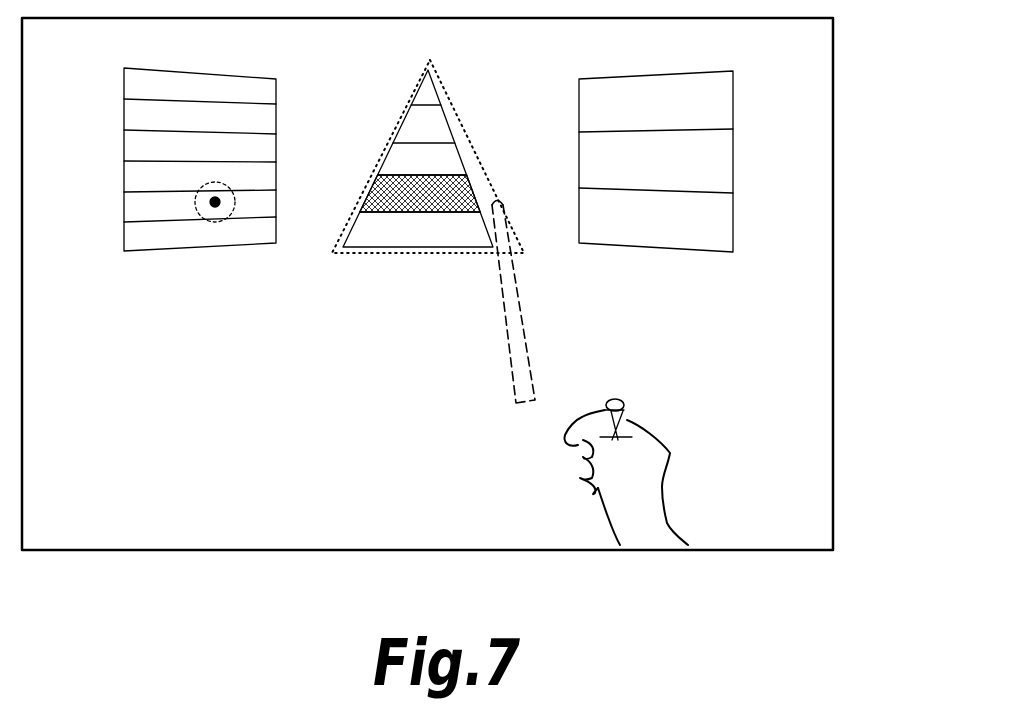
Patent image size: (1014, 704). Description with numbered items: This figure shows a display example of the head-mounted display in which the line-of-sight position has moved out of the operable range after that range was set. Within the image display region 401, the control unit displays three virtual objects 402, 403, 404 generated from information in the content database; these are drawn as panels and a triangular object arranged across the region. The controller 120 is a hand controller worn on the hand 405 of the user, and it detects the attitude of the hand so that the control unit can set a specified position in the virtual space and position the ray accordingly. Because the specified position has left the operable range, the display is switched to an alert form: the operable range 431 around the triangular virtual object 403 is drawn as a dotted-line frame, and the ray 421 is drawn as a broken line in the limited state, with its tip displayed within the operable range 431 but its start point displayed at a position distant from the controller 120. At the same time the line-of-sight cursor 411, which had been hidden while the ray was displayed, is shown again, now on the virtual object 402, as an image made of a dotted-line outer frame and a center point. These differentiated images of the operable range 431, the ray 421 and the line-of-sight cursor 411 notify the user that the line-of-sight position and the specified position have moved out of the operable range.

The image display region 401 is at (820, 430).
The virtual object 402 is at (167, 250).
The line-of-sight cursor 411 is at (233, 208).
The virtual object 403 is at (394, 238).
The operable range 431 is at (445, 95).
The ray 421 is at (523, 350).
The virtual object 404 is at (687, 247).
The hand 405 is at (607, 522).
The controller 120 is at (630, 403).